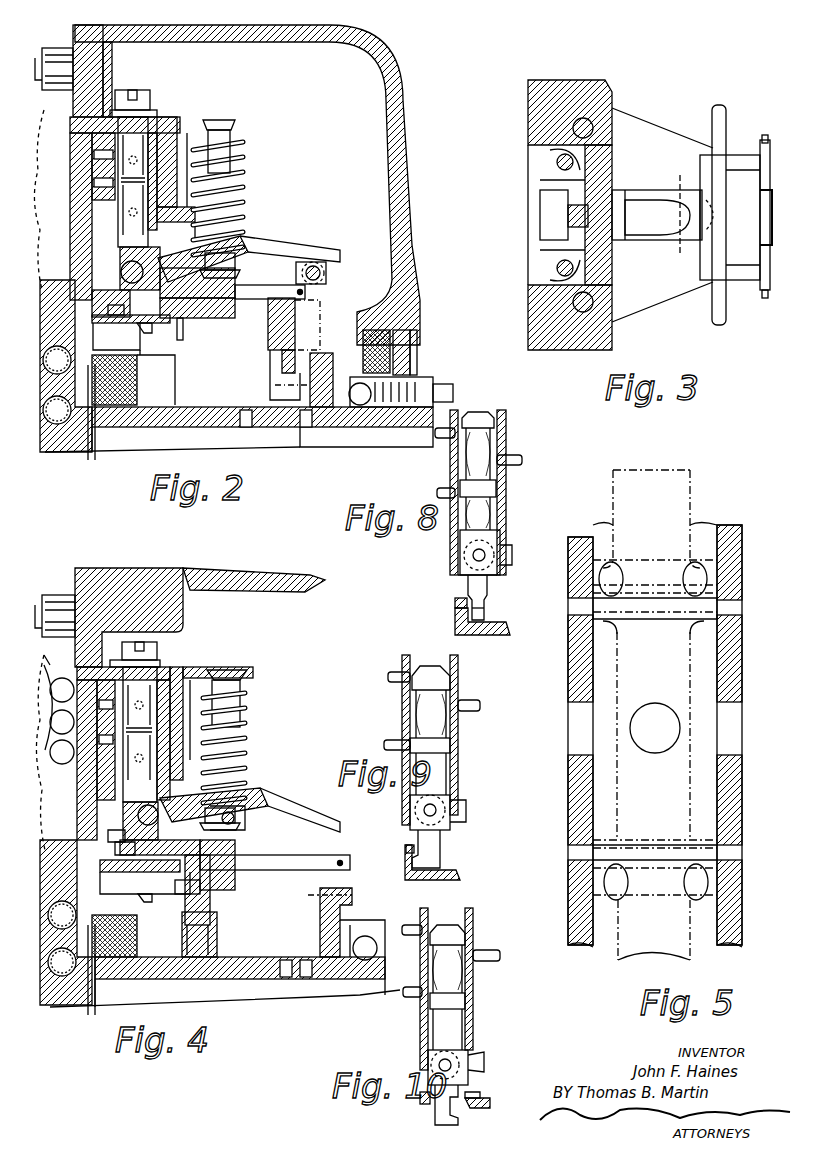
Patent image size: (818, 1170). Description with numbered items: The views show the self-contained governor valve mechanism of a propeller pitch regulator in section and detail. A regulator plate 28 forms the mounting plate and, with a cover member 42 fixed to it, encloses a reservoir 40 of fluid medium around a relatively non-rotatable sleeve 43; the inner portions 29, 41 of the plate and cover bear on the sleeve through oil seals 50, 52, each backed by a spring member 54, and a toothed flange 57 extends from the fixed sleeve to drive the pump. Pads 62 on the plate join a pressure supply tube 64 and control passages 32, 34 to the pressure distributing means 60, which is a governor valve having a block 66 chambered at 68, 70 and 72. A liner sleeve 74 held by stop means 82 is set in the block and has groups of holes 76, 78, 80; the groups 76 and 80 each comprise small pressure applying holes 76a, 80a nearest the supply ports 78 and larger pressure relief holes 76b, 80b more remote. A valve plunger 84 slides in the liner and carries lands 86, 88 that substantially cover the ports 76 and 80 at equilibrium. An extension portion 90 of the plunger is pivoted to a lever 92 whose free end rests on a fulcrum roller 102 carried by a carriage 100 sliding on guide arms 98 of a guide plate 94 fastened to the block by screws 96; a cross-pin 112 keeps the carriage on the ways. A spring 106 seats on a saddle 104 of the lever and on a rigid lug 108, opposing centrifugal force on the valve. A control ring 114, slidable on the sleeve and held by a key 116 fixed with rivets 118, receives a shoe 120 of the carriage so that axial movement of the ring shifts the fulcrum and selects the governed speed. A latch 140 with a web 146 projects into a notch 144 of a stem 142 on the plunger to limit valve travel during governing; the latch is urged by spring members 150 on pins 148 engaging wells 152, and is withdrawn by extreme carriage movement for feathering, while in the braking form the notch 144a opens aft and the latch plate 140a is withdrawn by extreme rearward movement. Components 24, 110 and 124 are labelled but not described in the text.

In FIG. 2, the housing cover 24 is at (257, 23).
In FIG. 4, the housing cover 24 is at (214, 570).
In FIG. 2, the regulator plate 28 is at (100, 40).
In FIG. 4, the regulator plate 28 is at (120, 590).
In FIG. 2, the inner portion of the plate 29 is at (140, 350).
In FIG. 2, the control passage 32 is at (62, 452).
In FIG. 4, the control passage 32 is at (66, 927).
In FIG. 2, the control passage 34 is at (105, 372).
In FIG. 4, the control passage 34 is at (92, 935).
In FIG. 2, the reservoir 40 is at (365, 133).
In FIG. 2, the inner portion of the cover 41 is at (380, 312).
In FIG. 2, the cover member 42 is at (345, 30).
In FIG. 4, the cover member 42 is at (290, 578).
In FIG. 2, the sleeve 43 is at (205, 428).
In FIG. 4, the sleeve 43 is at (200, 979).
In FIG. 2, the oil seal 50 is at (97, 460).
In FIG. 4, the oil seal 50 is at (95, 1015).
In FIG. 2, the oil seal 52 is at (420, 365).
In FIG. 2, the spring member 54 is at (412, 350).
In FIG. 4, the spring member 54 is at (125, 979).
In FIG. 2, the toothed flange 57 is at (395, 340).
In FIG. 4, the toothed flange 57 is at (352, 905).
In FIG. 2, the pressure distributing means 60 is at (285, 180).
In FIG. 4, the pressure distributing means 60 is at (308, 736).
In FIG. 2, the pads 62 is at (80, 60).
In FIG. 4, the pads 62 is at (80, 610).
In FIG. 2, the pressure supply tube 64 is at (41, 192).
In FIG. 4, the pressure supply tube 64 is at (52, 744).
In FIG. 2, the block 66 is at (170, 135).
In FIG. 3, the block 66 is at (575, 84).
In FIG. 4, the block 66 is at (168, 680).
In FIG. 2, the chamber 68 is at (53, 267).
In FIG. 4, the chamber 68 is at (246, 748).
In FIG. 2, the chamber 70 is at (57, 247).
In FIG. 4, the chamber 70 is at (245, 725).
In FIG. 4, the chamber 72 is at (224, 668).
In FIG. 2, the sleeve or liner 74 is at (180, 118).
In FIG. 5, the sleeve or liner 74 is at (742, 688).
In FIG. 4, the sleeve or liner 74 is at (178, 668).
In FIG. 2, the group of holes 76 is at (236, 195).
In FIG. 8, the group of holes 76 is at (452, 492).
In FIG. 9, the group of holes 76 is at (388, 742).
In FIG. 10, the group of holes 76 is at (412, 997).
In FIG. 4, the group of holes 76 is at (220, 819).
In FIG. 5, the pressure applying holes 76a is at (580, 855).
In FIG. 5, the pressure relief holes 76b is at (608, 885).
In FIG. 2, the pressure supply ports 78 is at (240, 140).
In FIG. 8, the pressure supply ports 78 is at (512, 468).
In FIG. 9, the pressure supply ports 78 is at (480, 706).
In FIG. 10, the pressure supply ports 78 is at (500, 956).
In FIG. 5, the pressure supply ports 78 is at (742, 738).
In FIG. 2, the group of holes 80 is at (214, 124).
In FIG. 8, the group of holes 80 is at (446, 438).
In FIG. 9, the group of holes 80 is at (392, 672).
In FIG. 10, the group of holes 80 is at (420, 930).
In FIG. 5, the pressure applying holes 80a is at (735, 606).
In FIG. 5, the pressure relief holes 80b is at (700, 580).
In FIG. 2, the stop means 82 is at (92, 318).
In FIG. 4, the stop means 82 is at (100, 866).
In FIG. 2, the valve plunger 84 is at (230, 232).
In FIG. 8, the valve plunger 84 is at (480, 450).
In FIG. 9, the valve plunger 84 is at (431, 714).
In FIG. 10, the valve plunger 84 is at (450, 978).
In FIG. 5, the valve plunger 84 is at (690, 512).
In FIG. 4, the valve plunger 84 is at (240, 710).
In FIG. 2, the land 86 is at (236, 210).
In FIG. 8, the land 86 is at (497, 490).
In FIG. 9, the land 86 is at (448, 745).
In FIG. 10, the land 86 is at (460, 1003).
In FIG. 5, the land 86 is at (705, 845).
In FIG. 4, the land 86 is at (110, 800).
In FIG. 2, the land 88 is at (140, 135).
In FIG. 8, the land 88 is at (496, 428).
In FIG. 9, the land 88 is at (450, 676).
In FIG. 10, the land 88 is at (462, 942).
In FIG. 5, the land 88 is at (742, 555).
In FIG. 4, the land 88 is at (145, 685).
In FIG. 2, the portion 90 is at (252, 246).
In FIG. 8, the portion 90 is at (488, 538).
In FIG. 4, the portion 90 is at (240, 795).
In FIG. 2, the lever 92 is at (322, 256).
In FIG. 8, the lever 92 is at (512, 555).
In FIG. 9, the lever 92 is at (438, 791).
In FIG. 10, the lever 92 is at (475, 1052).
In FIG. 4, the lever 92 is at (354, 827).
In FIG. 2, the guide plate 94 is at (116, 336).
In FIG. 4, the guide plate 94 is at (145, 887).
In FIG. 2, the screws 96 is at (152, 334).
In FIG. 3, the screws 96 is at (595, 130).
In FIG. 4, the screws 96 is at (153, 902).
In FIG. 3, the guide arms 98 is at (665, 140).
In FIG. 4, the guide arms 98 is at (275, 855).
In FIG. 2, the carriage 100 is at (268, 325).
In FIG. 3, the carriage 100 is at (745, 172).
In FIG. 4, the carriage 100 is at (212, 885).
In FIG. 2, the fulcrum roller 102 is at (326, 272).
In FIG. 4, the fulcrum roller 102 is at (240, 832).
In FIG. 2, the ledge or saddle 104 is at (215, 290).
In FIG. 3, the ledge or saddle 104 is at (628, 205).
In FIG. 4, the ledge or saddle 104 is at (236, 870).
In FIG. 2, the spring 106 is at (232, 150).
In FIG. 4, the spring 106 is at (246, 765).
In FIG. 3, the rigid lug 108 is at (678, 190).
In FIG. 2, the block 110 is at (92, 295).
In FIG. 3, the block 110 is at (528, 113).
In FIG. 2, the cross-pin 112 is at (291, 291).
In FIG. 3, the cross-pin 112 is at (770, 215).
In FIG. 4, the cross-pin 112 is at (352, 863).
In FIG. 2, the control ring 114 is at (310, 388).
In FIG. 4, the control ring 114 is at (217, 933).
In FIG. 2, the key 116 is at (246, 428).
In FIG. 4, the key 116 is at (286, 960).
In FIG. 2, the rivets 118 is at (306, 428).
In FIG. 4, the rivets 118 is at (306, 979).
In FIG. 2, the shoe 120 is at (272, 345).
In FIG. 3, the shoe 120 is at (726, 313).
In FIG. 4, the shoe 120 is at (212, 912).
In FIG. 2, the ball detent 124 is at (368, 430).
In FIG. 4, the ball detent 124 is at (368, 985).
In FIG. 2, the latch or stop member 140 is at (187, 316).
In FIG. 3, the latch or stop member 140 is at (545, 238).
In FIG. 8, the latch or stop member 140 is at (456, 630).
In FIG. 9, the latch or stop member 140 is at (460, 874).
In FIG. 4, the latch or stop member 140 is at (178, 895).
In FIG. 10, the foot 140a is at (490, 1103).
In FIG. 2, the stem 142 is at (108, 312).
In FIG. 3, the stem 142 is at (568, 215).
In FIG. 8, the stem 142 is at (486, 610).
In FIG. 4, the stem 142 is at (108, 834).
In FIG. 8, the notch 144 is at (478, 598).
In FIG. 9, the notch 144 is at (428, 860).
In FIG. 4, the notch 144 is at (115, 848).
In FIG. 10, the notch 144a is at (460, 1115).
In FIG. 8, the web or bar 146 is at (456, 600).
In FIG. 9, the web or bar 146 is at (418, 848).
In FIG. 10, the web or bar 146 is at (472, 1092).
In FIG. 3, the pins 148 is at (557, 164).
In FIG. 3, the spring members 150 is at (548, 265).
In FIG. 3, the wells 152 is at (575, 195).